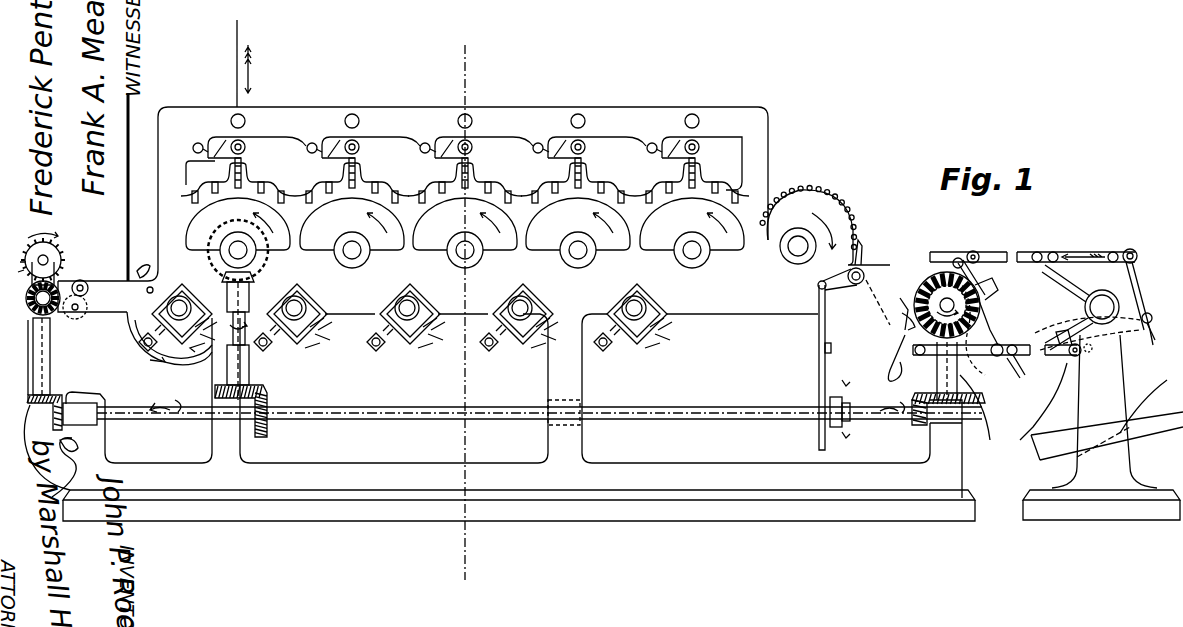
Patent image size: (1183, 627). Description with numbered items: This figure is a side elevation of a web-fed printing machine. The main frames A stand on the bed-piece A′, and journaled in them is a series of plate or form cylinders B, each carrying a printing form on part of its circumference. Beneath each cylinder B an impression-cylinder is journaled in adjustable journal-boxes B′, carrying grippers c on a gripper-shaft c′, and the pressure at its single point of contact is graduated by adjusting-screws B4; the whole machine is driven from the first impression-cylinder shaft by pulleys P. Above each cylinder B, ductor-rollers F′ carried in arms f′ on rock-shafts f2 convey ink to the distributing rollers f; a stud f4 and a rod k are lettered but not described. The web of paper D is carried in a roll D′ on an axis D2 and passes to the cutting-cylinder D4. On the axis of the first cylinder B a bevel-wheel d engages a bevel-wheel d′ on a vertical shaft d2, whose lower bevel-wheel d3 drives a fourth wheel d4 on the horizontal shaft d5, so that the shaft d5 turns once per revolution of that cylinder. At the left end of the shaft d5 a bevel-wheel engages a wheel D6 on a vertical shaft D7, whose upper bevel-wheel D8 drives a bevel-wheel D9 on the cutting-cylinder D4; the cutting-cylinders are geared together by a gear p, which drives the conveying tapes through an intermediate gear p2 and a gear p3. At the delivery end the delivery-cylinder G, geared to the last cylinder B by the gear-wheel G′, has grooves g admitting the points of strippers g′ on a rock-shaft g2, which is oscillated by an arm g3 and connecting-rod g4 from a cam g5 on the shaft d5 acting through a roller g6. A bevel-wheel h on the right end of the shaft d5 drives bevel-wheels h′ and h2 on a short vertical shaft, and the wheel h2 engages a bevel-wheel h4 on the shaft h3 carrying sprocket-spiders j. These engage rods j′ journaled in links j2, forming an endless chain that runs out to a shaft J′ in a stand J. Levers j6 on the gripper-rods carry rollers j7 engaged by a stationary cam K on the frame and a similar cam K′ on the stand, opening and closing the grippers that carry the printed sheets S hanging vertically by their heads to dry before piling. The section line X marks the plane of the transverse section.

The main frames A is at (413, 200).
The bed-piece A′ is at (519, 416).
The plate or form cylinders B is at (465, 233).
The adjustable journal-boxes B′ is at (405, 317).
The adjusting-screws B4 is at (368, 350).
The grippers c is at (406, 308).
The gripper-shaft c′ is at (432, 335).
The bevel-wheel d is at (238, 250).
The bevel-wheel d′ is at (226, 273).
The vertical shaft d2 is at (223, 341).
The bevel-wheel d3 is at (232, 365).
The bevel-wheel d4 is at (250, 414).
The horizontal shaft d5 is at (539, 412).
The web of paper D is at (28, 378).
The roll D′ is at (75, 441).
The axis D2 is at (50, 258).
The cutting-cylinder D4 is at (39, 291).
The bevel-wheel D6 is at (27, 400).
The vertical shaft D7 is at (52, 340).
The bevel-wheel D8 is at (68, 414).
The bevel-wheel D9 is at (73, 467).
The distributing or intermediate rollers f is at (465, 179).
The arms f′ is at (455, 147).
The ductor-rollers F′ is at (471, 148).
The rock-shafts f2 is at (455, 147).
The pivot stud f4 is at (192, 150).
The delivery-cylinder G is at (828, 227).
The gear-wheel G′ is at (808, 218).
The circumferential depressions or grooves g is at (815, 367).
The strippers g′ is at (880, 310).
The rock-shaft g2 is at (843, 286).
The arm g3 is at (819, 288).
The connecting-rod g4 is at (825, 349).
The cam g5 is at (840, 401).
The roller g6 is at (844, 424).
The bevel-wheel h is at (913, 420).
The bevel-wheel h′ is at (968, 403).
The bevel-wheel h2 is at (956, 366).
The shaft h3 is at (947, 305).
The bevel-wheel h4 is at (986, 291).
The sprocket-spiders j is at (1040, 308).
The rods j′ is at (1026, 304).
The links j2 is at (1055, 305).
The levers j6 is at (1049, 304).
The roller j7 is at (1084, 349).
The stand J is at (1101, 427).
The shaft J′ is at (1102, 307).
The stationary cam K is at (907, 314).
The cam K′ is at (1087, 339).
The rod k is at (181, 150).
The gear p is at (15, 263).
The intermediate gear p2 is at (83, 310).
The gear p3 is at (88, 288).
The pulleys P is at (102, 284).
The sheets S is at (1035, 370).
The section line X is at (446, 312).